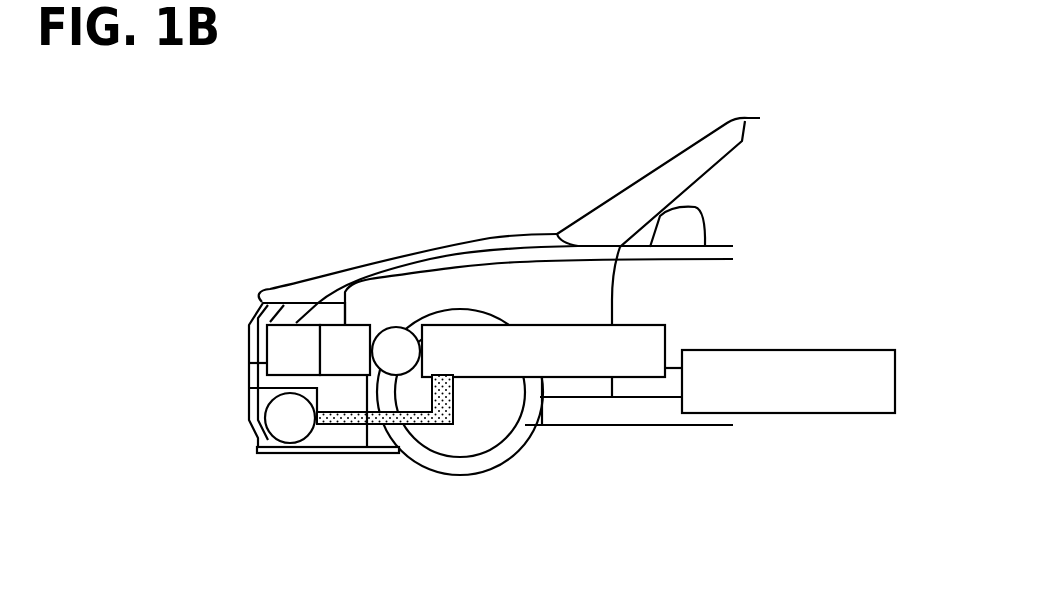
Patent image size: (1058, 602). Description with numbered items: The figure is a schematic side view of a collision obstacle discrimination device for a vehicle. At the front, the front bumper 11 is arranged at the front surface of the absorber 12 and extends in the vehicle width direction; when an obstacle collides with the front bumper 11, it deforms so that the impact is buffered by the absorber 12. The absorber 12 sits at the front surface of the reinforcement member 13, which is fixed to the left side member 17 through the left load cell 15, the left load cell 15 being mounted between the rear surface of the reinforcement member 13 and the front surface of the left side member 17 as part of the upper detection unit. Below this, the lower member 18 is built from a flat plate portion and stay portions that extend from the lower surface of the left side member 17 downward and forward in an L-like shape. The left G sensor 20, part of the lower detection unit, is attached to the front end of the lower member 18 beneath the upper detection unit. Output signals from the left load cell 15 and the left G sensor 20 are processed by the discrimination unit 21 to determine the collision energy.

The front bumper 11 is at (249, 352).
The absorber 12 is at (293, 300).
The reinforcement member 13 is at (332, 323).
The left load cell 15 is at (386, 328).
The left side member 17 is at (536, 325).
The lower member 18 is at (442, 425).
The left G sensor 20 is at (297, 438).
The discrimination unit 21 is at (838, 350).